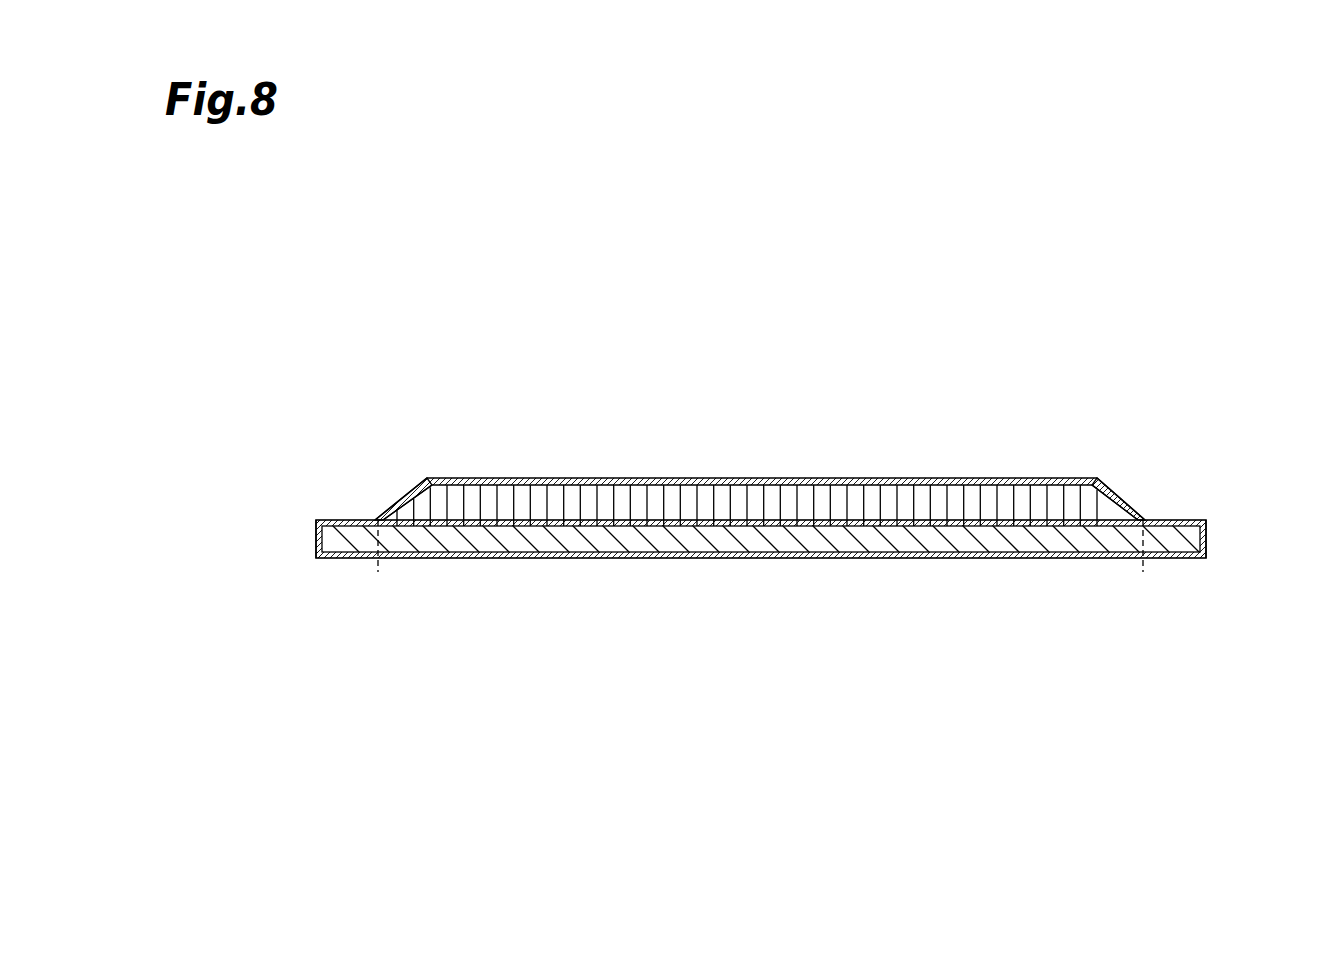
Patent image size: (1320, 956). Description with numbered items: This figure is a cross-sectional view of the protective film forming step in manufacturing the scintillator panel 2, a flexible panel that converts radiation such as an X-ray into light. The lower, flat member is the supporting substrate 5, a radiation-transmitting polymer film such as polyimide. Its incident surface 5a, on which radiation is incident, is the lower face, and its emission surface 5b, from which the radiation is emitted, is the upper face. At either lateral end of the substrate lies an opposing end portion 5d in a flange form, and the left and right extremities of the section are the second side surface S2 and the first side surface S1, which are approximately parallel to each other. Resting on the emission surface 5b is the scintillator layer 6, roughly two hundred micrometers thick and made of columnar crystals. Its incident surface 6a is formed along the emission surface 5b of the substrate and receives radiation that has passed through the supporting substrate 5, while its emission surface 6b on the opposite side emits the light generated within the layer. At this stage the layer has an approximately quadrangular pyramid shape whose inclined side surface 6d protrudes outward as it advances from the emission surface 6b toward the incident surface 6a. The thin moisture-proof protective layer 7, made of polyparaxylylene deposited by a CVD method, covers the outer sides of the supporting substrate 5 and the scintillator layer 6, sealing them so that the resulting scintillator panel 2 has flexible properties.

The scintillator panel 2 is at (435, 396).
The supporting substrate 5 is at (842, 540).
The incident surface 5a is at (965, 556).
The emission surface 5b is at (1031, 538).
The opposing end portion 5d is at (355, 537).
The scintillator layer 6 is at (905, 503).
The incident surface 6a is at (722, 530).
The emission surface 6b is at (790, 484).
The side surface 6d is at (403, 495).
The moisture-proof protective layer 7 is at (1005, 479).
The first side surface S1 is at (1206, 540).
The second side surface S2 is at (315, 540).